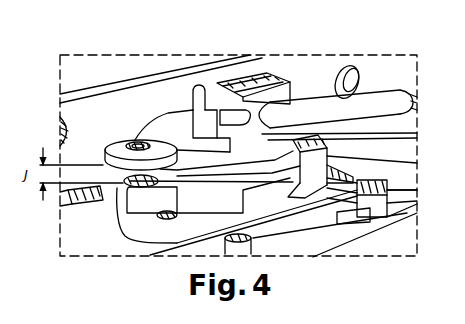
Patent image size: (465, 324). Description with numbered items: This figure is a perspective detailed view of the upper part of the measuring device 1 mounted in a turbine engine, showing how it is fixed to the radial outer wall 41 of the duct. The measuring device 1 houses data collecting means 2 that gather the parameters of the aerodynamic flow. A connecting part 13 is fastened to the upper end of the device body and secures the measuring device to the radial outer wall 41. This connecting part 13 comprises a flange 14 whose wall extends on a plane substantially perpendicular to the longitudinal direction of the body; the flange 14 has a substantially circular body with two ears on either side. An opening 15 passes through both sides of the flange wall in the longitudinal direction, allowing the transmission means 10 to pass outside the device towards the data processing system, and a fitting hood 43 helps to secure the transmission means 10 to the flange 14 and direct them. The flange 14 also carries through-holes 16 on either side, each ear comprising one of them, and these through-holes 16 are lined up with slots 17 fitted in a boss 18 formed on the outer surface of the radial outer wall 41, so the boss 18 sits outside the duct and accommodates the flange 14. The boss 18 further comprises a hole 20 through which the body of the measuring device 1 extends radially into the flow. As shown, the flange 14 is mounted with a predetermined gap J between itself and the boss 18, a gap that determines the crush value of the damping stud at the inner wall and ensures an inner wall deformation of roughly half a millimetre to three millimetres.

The measuring device 1 is at (143, 114).
The data collecting means 2 is at (418, 188).
The transmission means 10 is at (377, 96).
The connecting part 13 is at (102, 157).
The flange 14 is at (162, 122).
The opening 15 is at (188, 122).
The through-holes 16 is at (134, 141).
The slots 17 is at (133, 187).
The boss 18 is at (68, 199).
The hole 20 is at (418, 163).
The radial outer wall 41 is at (80, 234).
The fitting hood 43 is at (298, 91).